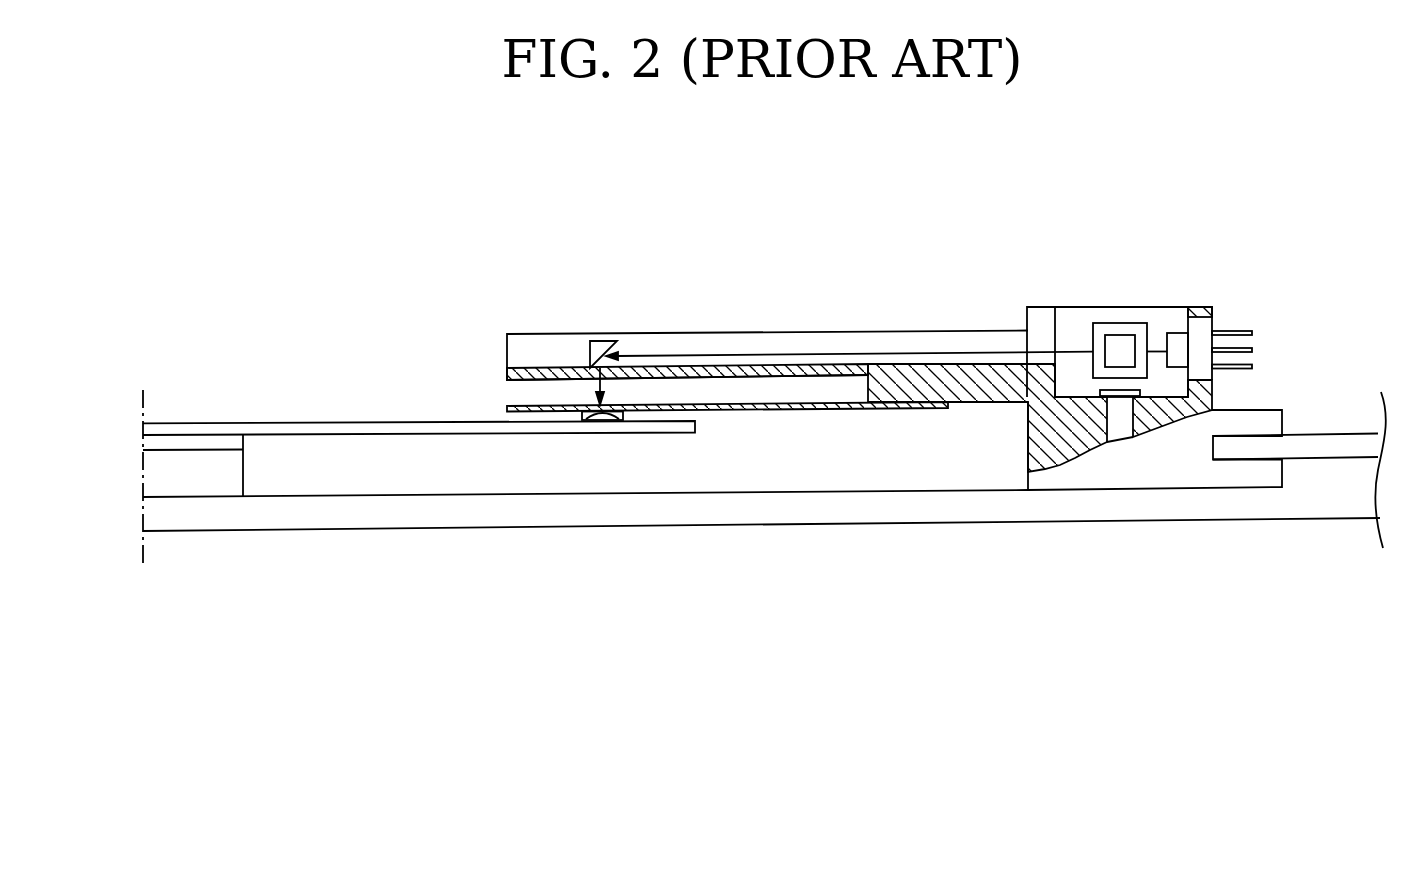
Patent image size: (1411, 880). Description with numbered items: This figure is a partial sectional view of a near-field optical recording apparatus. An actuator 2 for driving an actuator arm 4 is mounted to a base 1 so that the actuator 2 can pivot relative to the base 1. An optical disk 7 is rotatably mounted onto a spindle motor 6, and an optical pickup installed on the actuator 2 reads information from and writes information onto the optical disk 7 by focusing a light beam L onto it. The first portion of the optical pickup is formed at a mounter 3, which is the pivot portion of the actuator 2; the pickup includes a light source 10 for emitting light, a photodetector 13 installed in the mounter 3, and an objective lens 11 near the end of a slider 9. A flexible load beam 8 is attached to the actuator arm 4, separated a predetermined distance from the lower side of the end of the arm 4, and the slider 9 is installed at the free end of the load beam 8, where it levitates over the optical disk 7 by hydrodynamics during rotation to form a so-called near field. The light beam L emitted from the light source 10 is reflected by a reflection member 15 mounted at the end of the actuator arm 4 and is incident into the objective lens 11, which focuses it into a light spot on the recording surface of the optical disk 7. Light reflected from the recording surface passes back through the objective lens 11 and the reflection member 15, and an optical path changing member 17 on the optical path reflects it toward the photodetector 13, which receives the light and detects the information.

The base 1 is at (937, 516).
The actuator 2 is at (708, 331).
The mounter 3 is at (1217, 398).
The actuator arm 4 is at (768, 342).
The spindle motor 6 is at (203, 477).
The optical disk 7 is at (455, 424).
The flexible load beam 8 is at (783, 411).
The slider 9 is at (505, 411).
The light source 10 is at (1202, 333).
The objective lens 11 is at (602, 433).
The photodetector 13 is at (1133, 328).
The reflection member 15 is at (599, 338).
The optical path changing member 17 is at (1115, 337).
The light beam L is at (855, 352).